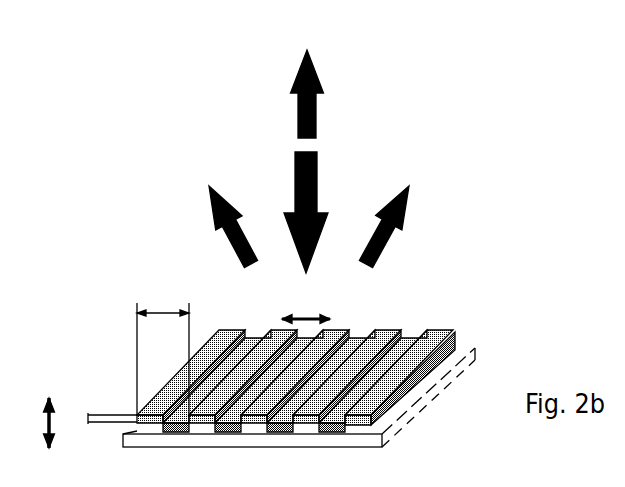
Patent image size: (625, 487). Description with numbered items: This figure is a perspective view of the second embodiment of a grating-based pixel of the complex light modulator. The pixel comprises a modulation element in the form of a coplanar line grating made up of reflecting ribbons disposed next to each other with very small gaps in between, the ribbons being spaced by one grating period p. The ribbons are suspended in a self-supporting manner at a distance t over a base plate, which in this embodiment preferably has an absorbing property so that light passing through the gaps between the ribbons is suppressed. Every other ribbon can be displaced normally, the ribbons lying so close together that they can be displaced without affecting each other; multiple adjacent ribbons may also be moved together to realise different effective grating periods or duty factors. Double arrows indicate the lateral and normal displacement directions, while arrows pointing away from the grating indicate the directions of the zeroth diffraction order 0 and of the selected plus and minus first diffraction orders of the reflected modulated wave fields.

The zeroth diffraction order 0 is at (306, 143).
The grating period p is at (163, 349).
The distance over base plate t is at (105, 419).